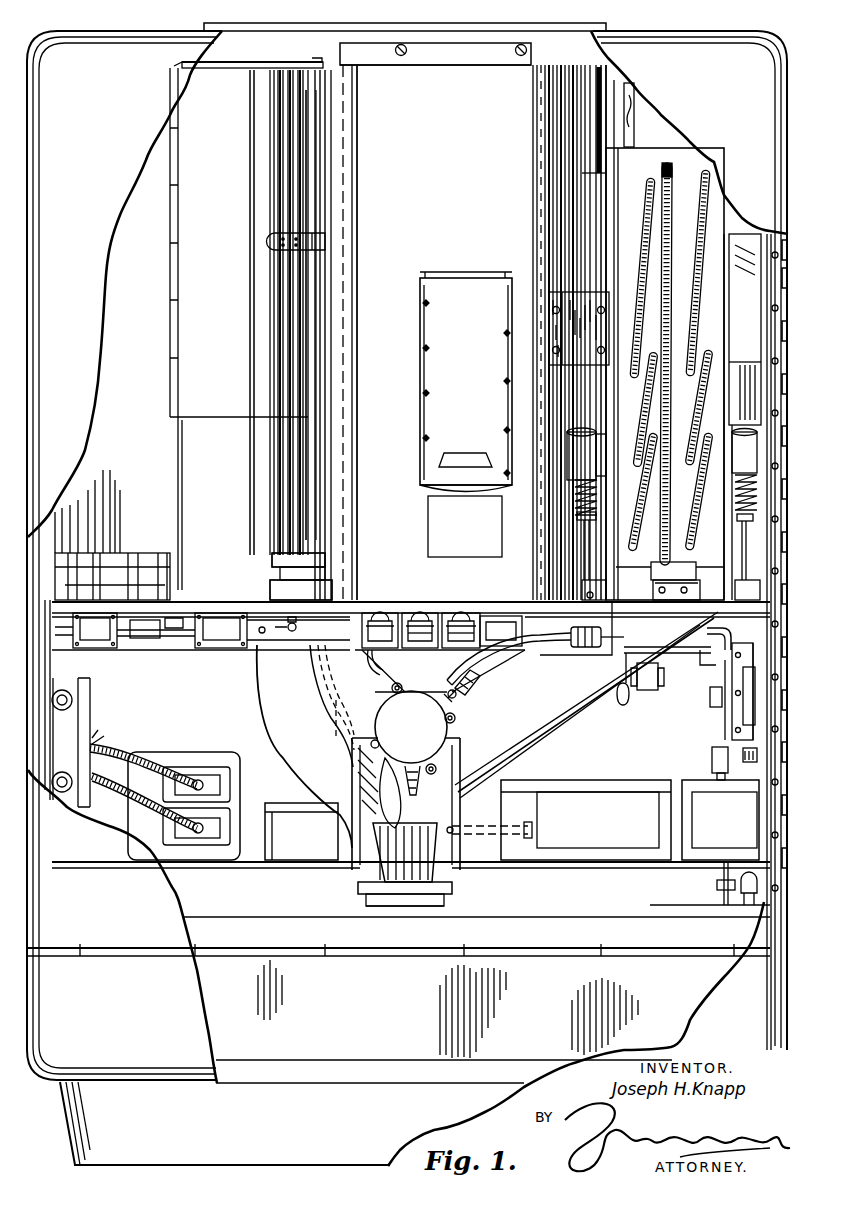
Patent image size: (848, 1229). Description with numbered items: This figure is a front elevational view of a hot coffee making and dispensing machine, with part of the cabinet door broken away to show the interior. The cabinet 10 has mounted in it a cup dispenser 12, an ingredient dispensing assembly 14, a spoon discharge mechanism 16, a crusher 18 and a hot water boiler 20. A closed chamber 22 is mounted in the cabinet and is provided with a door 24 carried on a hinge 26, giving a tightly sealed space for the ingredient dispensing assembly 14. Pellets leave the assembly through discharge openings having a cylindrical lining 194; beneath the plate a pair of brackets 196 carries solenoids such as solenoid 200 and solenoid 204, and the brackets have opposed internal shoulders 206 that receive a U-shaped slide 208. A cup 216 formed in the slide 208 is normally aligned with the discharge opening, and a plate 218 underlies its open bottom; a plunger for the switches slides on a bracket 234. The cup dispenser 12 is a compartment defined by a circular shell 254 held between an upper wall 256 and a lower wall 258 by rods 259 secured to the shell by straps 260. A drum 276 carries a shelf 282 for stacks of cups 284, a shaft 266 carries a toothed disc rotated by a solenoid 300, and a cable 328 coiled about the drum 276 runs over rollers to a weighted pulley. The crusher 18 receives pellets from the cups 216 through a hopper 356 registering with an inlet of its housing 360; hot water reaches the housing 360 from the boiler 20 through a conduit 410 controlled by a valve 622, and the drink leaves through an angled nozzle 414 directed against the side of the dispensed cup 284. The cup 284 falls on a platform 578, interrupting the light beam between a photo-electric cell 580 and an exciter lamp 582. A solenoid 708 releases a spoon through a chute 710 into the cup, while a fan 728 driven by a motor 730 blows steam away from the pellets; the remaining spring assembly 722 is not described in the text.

The cabinet 10 is at (407, 594).
The cup dispenser 12 is at (193, 329).
The ingredient dispensing assembly 14 is at (473, 332).
The spoon discharge mechanism 16 is at (665, 374).
The crusher 18 is at (438, 760).
The hot water boiler 20 is at (748, 233).
The closed chamber 22 is at (362, 70).
The door 24 is at (425, 208).
The hinge 26 is at (540, 160).
The cylindrical lining 194 is at (449, 613).
The brackets 196 is at (418, 613).
The solenoid 200 is at (386, 660).
The solenoid 204 is at (494, 673).
The internal shoulders 206 is at (411, 641).
The slide 208 is at (373, 613).
The cup 216 is at (440, 641).
The plate 218 is at (371, 651).
The bracket 234 is at (440, 880).
The circular shell 254 is at (318, 302).
The upper wall 256 is at (258, 63).
The lower wall 258 is at (342, 586).
The rods 259 is at (318, 501).
The straps 260 is at (330, 241).
The shaft 266 is at (175, 645).
The drum 276 is at (112, 578).
The shelf 282 is at (128, 590).
The cups 284 is at (325, 563).
The solenoid 300 is at (90, 640).
The cable 328 is at (277, 713).
The hopper 356 is at (460, 694).
The housing 360 is at (441, 723).
The conduit 410 is at (486, 680).
The nozzle 414 is at (413, 782).
The platform 578 is at (380, 907).
The photo-electric cell 580 is at (593, 838).
The exciter lamp 582 is at (305, 850).
The valve 622 is at (590, 650).
The solenoid 708 is at (568, 455).
The chute 710 is at (548, 730).
The spring assembly 722 is at (731, 480).
The fan 728 is at (608, 80).
The motor 730 is at (647, 112).